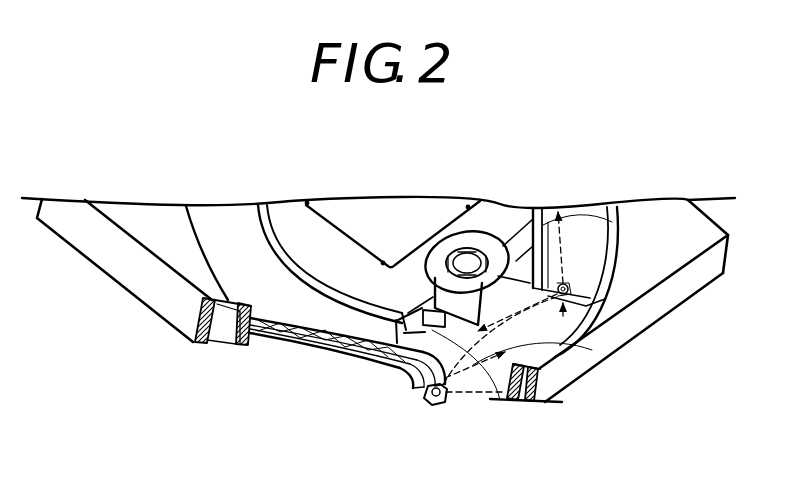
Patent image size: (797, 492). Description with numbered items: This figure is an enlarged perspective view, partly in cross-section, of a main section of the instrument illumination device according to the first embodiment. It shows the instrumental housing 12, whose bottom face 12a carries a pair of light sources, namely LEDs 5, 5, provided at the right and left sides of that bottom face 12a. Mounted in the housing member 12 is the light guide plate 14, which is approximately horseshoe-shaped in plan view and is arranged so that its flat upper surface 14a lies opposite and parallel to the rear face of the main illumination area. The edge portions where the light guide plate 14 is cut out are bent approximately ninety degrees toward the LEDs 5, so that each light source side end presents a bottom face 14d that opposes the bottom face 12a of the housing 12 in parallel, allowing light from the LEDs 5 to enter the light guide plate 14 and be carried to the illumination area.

The LED 5 is at (440, 405).
The instrumental housing 12 is at (677, 298).
The bottom face 12a is at (593, 345).
The light guide plate 14 is at (237, 240).
The flat upper surface 14a is at (262, 278).
The bottom face 14d is at (428, 388).